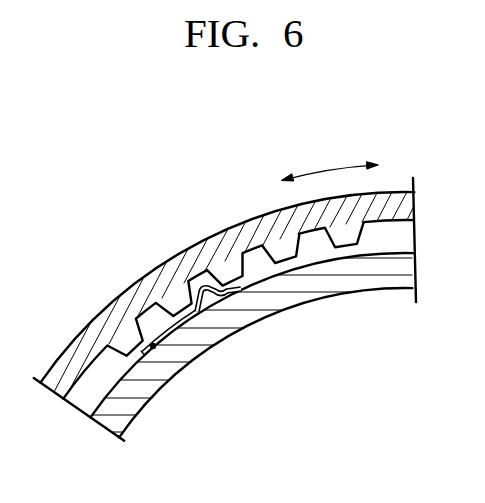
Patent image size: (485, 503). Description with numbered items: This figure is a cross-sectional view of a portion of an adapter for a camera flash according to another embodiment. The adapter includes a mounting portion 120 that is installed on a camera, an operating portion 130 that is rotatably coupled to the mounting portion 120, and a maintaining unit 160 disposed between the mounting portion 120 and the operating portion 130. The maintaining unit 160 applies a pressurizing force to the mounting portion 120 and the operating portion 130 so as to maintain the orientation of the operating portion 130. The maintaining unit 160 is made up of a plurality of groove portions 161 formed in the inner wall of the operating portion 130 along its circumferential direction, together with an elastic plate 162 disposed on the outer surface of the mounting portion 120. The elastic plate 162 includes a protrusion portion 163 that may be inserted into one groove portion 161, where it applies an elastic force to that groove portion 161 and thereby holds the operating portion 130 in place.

The mounting portion 120 is at (320, 306).
The operating portion 130 is at (228, 218).
The maintaining unit 160 is at (220, 323).
The groove portions 161 is at (245, 263).
The elastic plate 162 is at (153, 346).
The protrusion portion 163 is at (202, 284).